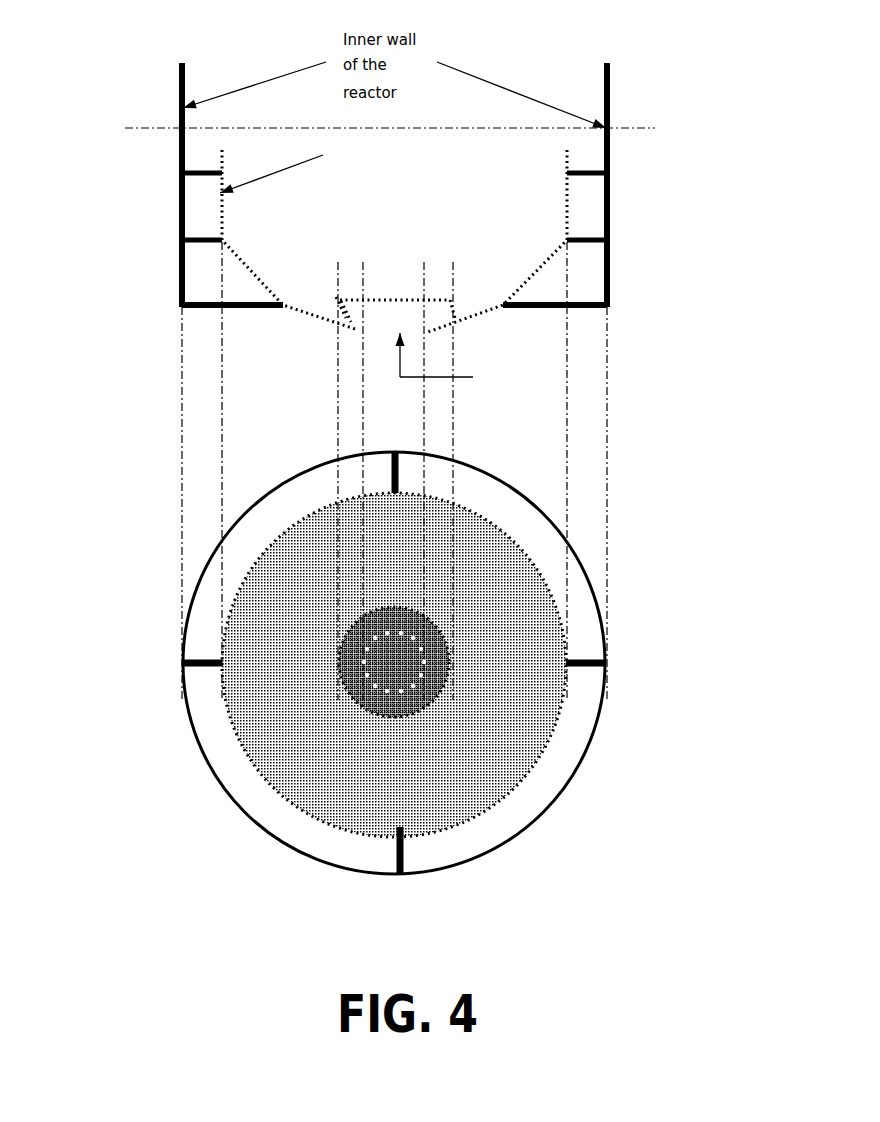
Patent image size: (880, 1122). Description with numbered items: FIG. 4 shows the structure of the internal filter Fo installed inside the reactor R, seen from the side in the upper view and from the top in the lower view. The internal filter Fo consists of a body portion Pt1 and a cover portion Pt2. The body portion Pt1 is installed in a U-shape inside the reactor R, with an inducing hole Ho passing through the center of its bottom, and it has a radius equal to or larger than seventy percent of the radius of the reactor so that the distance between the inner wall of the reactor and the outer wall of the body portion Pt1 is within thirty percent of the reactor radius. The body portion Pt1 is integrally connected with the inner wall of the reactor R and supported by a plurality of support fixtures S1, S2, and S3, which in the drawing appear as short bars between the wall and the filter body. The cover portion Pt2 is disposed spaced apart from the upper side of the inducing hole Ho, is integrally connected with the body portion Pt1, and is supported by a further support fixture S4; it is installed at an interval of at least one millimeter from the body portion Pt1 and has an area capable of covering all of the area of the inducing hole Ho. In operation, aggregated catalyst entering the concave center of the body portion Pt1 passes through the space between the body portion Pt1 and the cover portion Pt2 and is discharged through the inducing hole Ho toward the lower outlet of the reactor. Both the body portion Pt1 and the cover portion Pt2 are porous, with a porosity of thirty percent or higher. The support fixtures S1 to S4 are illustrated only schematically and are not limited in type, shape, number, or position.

The support fixture S1 is at (200, 170).
The support fixture S2 is at (187, 243).
The support fixture S3 is at (183, 300).
The support fixture S4 is at (340, 303).
The reactor R is at (608, 80).
The body portion Pt1 is at (513, 783).
The cover portion Pt2 is at (390, 300).
The inducing hole Ho is at (427, 662).
The internal filter Fo is at (285, 800).